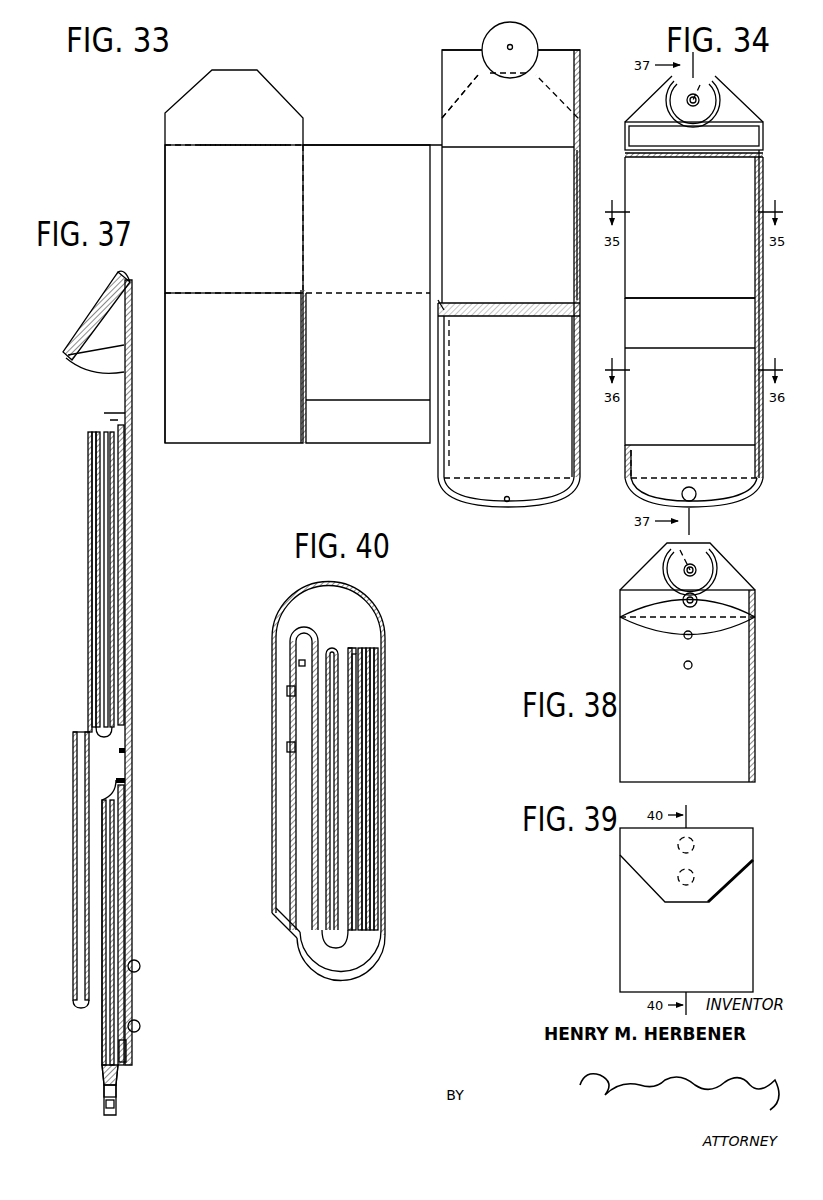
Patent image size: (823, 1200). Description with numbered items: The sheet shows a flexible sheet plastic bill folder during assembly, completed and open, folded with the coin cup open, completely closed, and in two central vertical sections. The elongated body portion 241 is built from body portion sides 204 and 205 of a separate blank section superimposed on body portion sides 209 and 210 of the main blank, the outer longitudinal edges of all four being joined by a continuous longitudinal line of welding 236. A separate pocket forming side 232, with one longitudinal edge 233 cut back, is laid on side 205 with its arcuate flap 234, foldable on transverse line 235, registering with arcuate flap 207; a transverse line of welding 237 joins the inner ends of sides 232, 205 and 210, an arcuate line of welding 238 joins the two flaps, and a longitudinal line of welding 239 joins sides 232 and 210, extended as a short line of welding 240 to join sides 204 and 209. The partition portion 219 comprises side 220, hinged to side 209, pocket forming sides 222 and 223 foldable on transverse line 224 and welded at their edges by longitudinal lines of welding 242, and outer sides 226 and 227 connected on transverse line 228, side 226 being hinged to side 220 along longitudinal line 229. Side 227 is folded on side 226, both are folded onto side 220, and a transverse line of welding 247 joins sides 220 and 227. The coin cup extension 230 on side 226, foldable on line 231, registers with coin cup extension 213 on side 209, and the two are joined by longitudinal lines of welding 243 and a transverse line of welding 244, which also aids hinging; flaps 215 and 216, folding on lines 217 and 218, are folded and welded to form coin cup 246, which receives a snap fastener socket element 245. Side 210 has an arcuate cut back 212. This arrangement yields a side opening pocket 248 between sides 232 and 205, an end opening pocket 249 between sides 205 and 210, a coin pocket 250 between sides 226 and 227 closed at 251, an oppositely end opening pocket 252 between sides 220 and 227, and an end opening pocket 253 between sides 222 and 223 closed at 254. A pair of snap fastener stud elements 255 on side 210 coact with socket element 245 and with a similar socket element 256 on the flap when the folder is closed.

In FIG. 33, the body portion side 204 is at (511, 263).
In FIG. 37, the body portion side 204 is at (126, 512).
In FIG. 40, the body portion side 204 is at (380, 860).
In FIG. 33, the body portion side 205 is at (570, 385).
In FIG. 37, the body portion side 205 is at (116, 855).
In FIG. 40, the body portion side 205 is at (307, 845).
In FIG. 38, the body portion side 205 is at (702, 636).
In FIG. 37, the arcuate flap 207 is at (114, 1088).
In FIG. 40, the arcuate flap 207 is at (327, 648).
In FIG. 38, the arcuate flap 207 is at (650, 616).
In FIG. 37, the body portion side 209 is at (134, 486).
In FIG. 40, the body portion side 209 is at (378, 790).
In FIG. 37, the body portion side 210 is at (128, 828).
In FIG. 40, the body portion side 210 is at (297, 862).
In FIG. 38, the body portion side 210 is at (687, 686).
In FIG. 39, the body portion side 210 is at (686, 910).
In FIG. 37, the arcuate cut back 212 is at (127, 1052).
In FIG. 40, the arcuate cut back 212 is at (297, 630).
In FIG. 38, the arcuate cut back 212 is at (726, 626).
In FIG. 33, the coin cup extension 213 is at (460, 126).
In FIG. 37, the coin cup extension 213 is at (78, 364).
In FIG. 40, the coin cup extension 213 is at (277, 715).
In FIG. 39, the coin cup extension 213 is at (655, 862).
In FIG. 33, the flaps 215 is at (455, 72).
In FIG. 34, the flaps 215 is at (782, 119).
In FIG. 37, the flaps 215 is at (100, 305).
In FIG. 40, the flaps 215 is at (288, 786).
In FIG. 38, the flaps 215 is at (640, 583).
In FIG. 33, the flap 216 is at (495, 38).
In FIG. 34, the flap 216 is at (717, 98).
In FIG. 37, the flap 216 is at (90, 318).
In FIG. 40, the flap 216 is at (291, 775).
In FIG. 38, the flap 216 is at (672, 560).
In FIG. 33, the fold line 217 is at (462, 98).
In FIG. 33, the fold line 218 is at (524, 78).
In FIG. 34, the partition portion 219 is at (747, 194).
In FIG. 37, the partition portion 219 is at (114, 620).
In FIG. 40, the partition portion 219 is at (363, 718).
In FIG. 33, the partition side 220 is at (366, 219).
In FIG. 34, the partition side 220 is at (690, 227).
In FIG. 37, the partition side 220 is at (92, 615).
In FIG. 40, the partition side 220 is at (350, 755).
In FIG. 33, the pocket forming side 222 is at (365, 366).
In FIG. 37, the pocket forming side 222 is at (86, 908).
In FIG. 40, the pocket forming side 222 is at (330, 833).
In FIG. 34, the pocket forming side 223 is at (690, 371).
In FIG. 37, the pocket forming side 223 is at (74, 865).
In FIG. 40, the pocket forming side 223 is at (332, 813).
In FIG. 33, the transverse fold line 224 is at (370, 293).
In FIG. 33, the partition side 226 is at (234, 219).
In FIG. 37, the partition side 226 is at (116, 540).
In FIG. 40, the partition side 226 is at (371, 770).
In FIG. 33, the partition side 227 is at (234, 368).
In FIG. 37, the partition side 227 is at (104, 570).
In FIG. 40, the partition side 227 is at (356, 736).
In FIG. 33, the transverse fold line 228 is at (225, 293).
In FIG. 33, the longitudinal fold line 229 is at (305, 205).
In FIG. 33, the coin cup extension 230 is at (212, 112).
In FIG. 34, the coin cup extension 230 is at (694, 113).
In FIG. 37, the coin cup extension 230 is at (124, 390).
In FIG. 40, the coin cup extension 230 is at (277, 688).
In FIG. 38, the coin cup extension 230 is at (625, 601).
In FIG. 33, the transverse fold line 231 is at (240, 148).
In FIG. 33, the pocket forming side 232 is at (509, 405).
In FIG. 34, the pocket forming side 232 is at (640, 461).
In FIG. 37, the pocket forming side 232 is at (106, 871).
In FIG. 40, the pocket forming side 232 is at (313, 822).
In FIG. 33, the longitudinal edge 233 is at (566, 413).
In FIG. 33, the arcuate flap 234 is at (491, 496).
In FIG. 34, the arcuate flap 234 is at (720, 486).
In FIG. 37, the arcuate flap 234 is at (102, 1093).
In FIG. 40, the arcuate flap 234 is at (300, 648).
In FIG. 33, the transverse fold line 235 is at (453, 487).
In FIG. 33, the longitudinal line of welding 236 is at (579, 190).
In FIG. 34, the longitudinal line of welding 236 is at (625, 430).
In FIG. 33, the transverse line of welding 237 is at (546, 318).
In FIG. 37, the transverse line of welding 237 is at (127, 782).
In FIG. 40, the transverse line of welding 237 is at (296, 942).
In FIG. 33, the arcuate line of welding 238 is at (545, 502).
In FIG. 34, the arcuate line of welding 238 is at (632, 488).
In FIG. 37, the arcuate line of welding 238 is at (114, 1114).
In FIG. 40, the arcuate line of welding 238 is at (288, 696).
In FIG. 33, the longitudinal line of welding 239 is at (450, 362).
In FIG. 34, the longitudinal line of welding 239 is at (627, 454).
In FIG. 33, the short line of welding 240 is at (446, 302).
In FIG. 33, the body portion 241 is at (582, 312).
In FIG. 37, the body portion 241 is at (134, 592).
In FIG. 40, the body portion 241 is at (387, 897).
In FIG. 38, the body portion 241 is at (632, 730).
In FIG. 39, the body portion 241 is at (633, 953).
In FIG. 33, the longitudinal lines of welding 242 is at (430, 400).
In FIG. 34, the longitudinal lines of welding 242 is at (625, 348).
In FIG. 34, the longitudinal lines of welding 243 is at (762, 136).
In FIG. 34, the transverse line of welding 244 is at (724, 144).
In FIG. 37, the transverse line of welding 244 is at (128, 415).
In FIG. 40, the transverse line of welding 244 is at (383, 625).
In FIG. 34, the snap fastener socket element 245 is at (700, 97).
In FIG. 37, the snap fastener socket element 245 is at (76, 337).
In FIG. 40, the snap fastener socket element 245 is at (300, 742).
In FIG. 38, the snap fastener socket element 245 is at (700, 571).
In FIG. 39, the snap fastener socket element 245 is at (694, 874).
In FIG. 34, the coin cup 246 is at (724, 78).
In FIG. 37, the coin cup 246 is at (122, 271).
In FIG. 40, the coin cup 246 is at (276, 762).
In FIG. 38, the coin cup 246 is at (730, 560).
In FIG. 39, the coin cup 246 is at (730, 876).
In FIG. 34, the transverse line of welding 247 is at (676, 158).
In FIG. 37, the transverse line of welding 247 is at (96, 440).
In FIG. 40, the transverse line of welding 247 is at (358, 648).
In FIG. 33, the side opening pocket 248 is at (576, 368).
In FIG. 37, the side opening pocket 248 is at (110, 812).
In FIG. 40, the side opening pocket 248 is at (307, 880).
In FIG. 37, the end opening pocket 249 is at (118, 1062).
In FIG. 40, the end opening pocket 249 is at (298, 812).
In FIG. 38, the end opening pocket 249 is at (722, 625).
In FIG. 34, the coin pocket 250 is at (648, 150).
In FIG. 37, the coin pocket 250 is at (108, 432).
In FIG. 40, the coin pocket 250 is at (372, 671).
In FIG. 37, the closed inner end 251 is at (112, 722).
In FIG. 37, the end opening pocket 252 is at (90, 687).
In FIG. 40, the end opening pocket 252 is at (359, 698).
In FIG. 34, the end opening pocket 253 is at (732, 297).
In FIG. 37, the end opening pocket 253 is at (82, 732).
In FIG. 40, the end opening pocket 253 is at (322, 900).
In FIG. 34, the closed end 254 is at (732, 447).
In FIG. 37, the closed end 254 is at (80, 1006).
In FIG. 40, the closed end 254 is at (338, 648).
In FIG. 37, the snap fastener stud elements 255 is at (140, 1026).
In FIG. 40, the snap fastener stud elements 255 is at (300, 676).
In FIG. 38, the snap fastener stud elements 255 is at (684, 665).
In FIG. 34, the snap fastener socket element 256 is at (694, 500).
In FIG. 37, the snap fastener socket element 256 is at (115, 1105).
In FIG. 40, the snap fastener socket element 256 is at (290, 683).
In FIG. 38, the snap fastener socket element 256 is at (693, 607).
In FIG. 39, the snap fastener socket element 256 is at (692, 842).